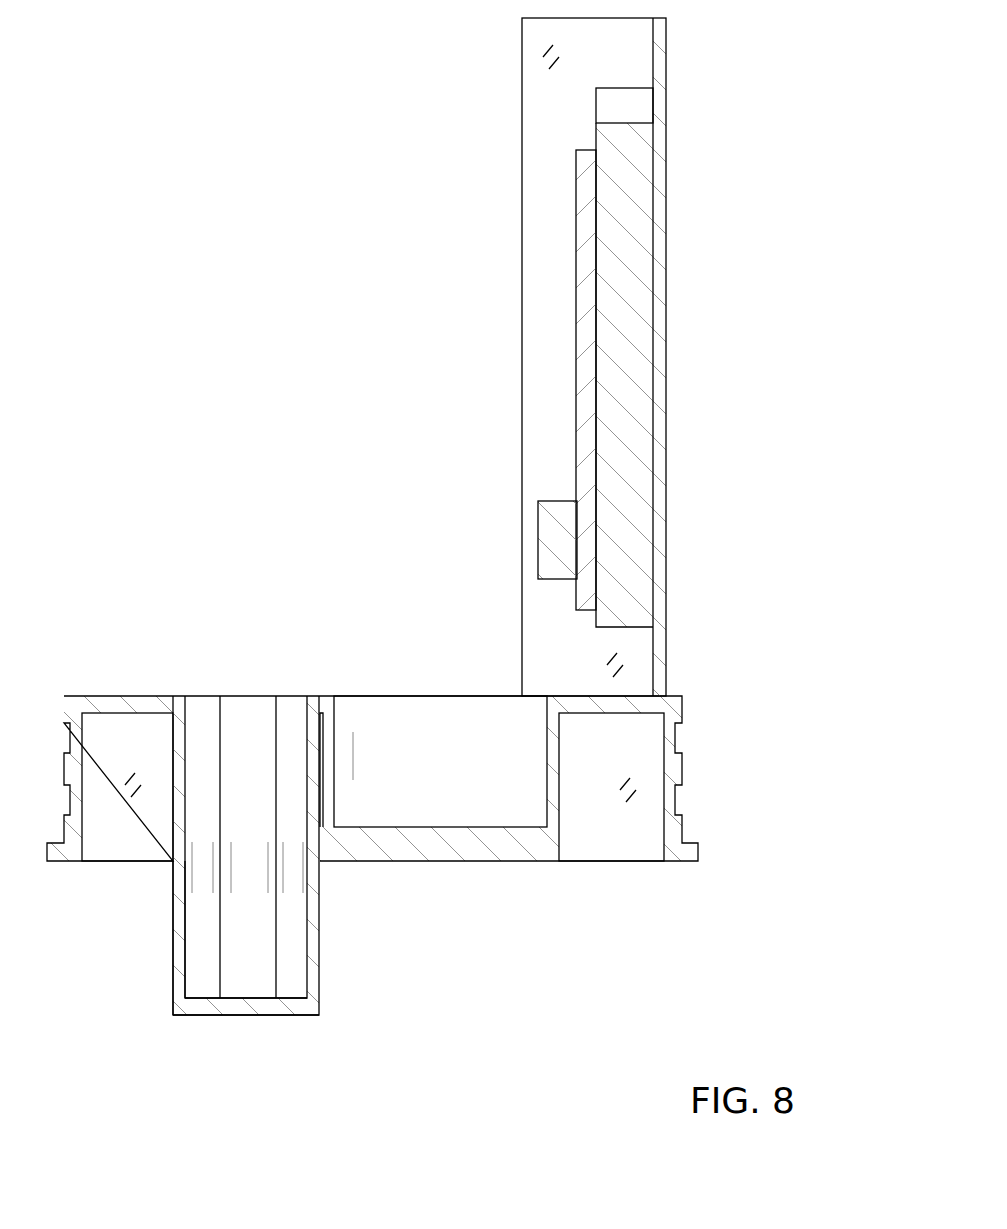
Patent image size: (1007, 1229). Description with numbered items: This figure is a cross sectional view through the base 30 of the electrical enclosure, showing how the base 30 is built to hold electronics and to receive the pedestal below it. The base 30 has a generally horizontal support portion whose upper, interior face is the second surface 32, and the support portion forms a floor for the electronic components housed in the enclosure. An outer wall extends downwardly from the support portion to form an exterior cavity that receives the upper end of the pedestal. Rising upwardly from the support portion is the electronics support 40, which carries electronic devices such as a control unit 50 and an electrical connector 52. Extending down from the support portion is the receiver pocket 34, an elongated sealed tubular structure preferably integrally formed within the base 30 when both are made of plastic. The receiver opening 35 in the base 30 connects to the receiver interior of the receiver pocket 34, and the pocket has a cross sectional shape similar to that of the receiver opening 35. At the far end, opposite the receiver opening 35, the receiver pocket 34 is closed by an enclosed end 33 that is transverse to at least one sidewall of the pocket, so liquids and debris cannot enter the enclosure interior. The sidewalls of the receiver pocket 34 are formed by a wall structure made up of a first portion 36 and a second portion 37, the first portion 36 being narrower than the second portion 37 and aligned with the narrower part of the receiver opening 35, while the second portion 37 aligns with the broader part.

The base 30 is at (682, 775).
The second surface 32 is at (125, 696).
The enclosed end 33 is at (210, 1015).
The receiver pocket 34 is at (322, 985).
The receiver opening 35 is at (248, 696).
The first portion 36 is at (240, 964).
The second portion 37 is at (173, 917).
The electronics support 40 is at (666, 195).
The control unit 50 is at (576, 262).
The electrical connector 52 is at (557, 501).